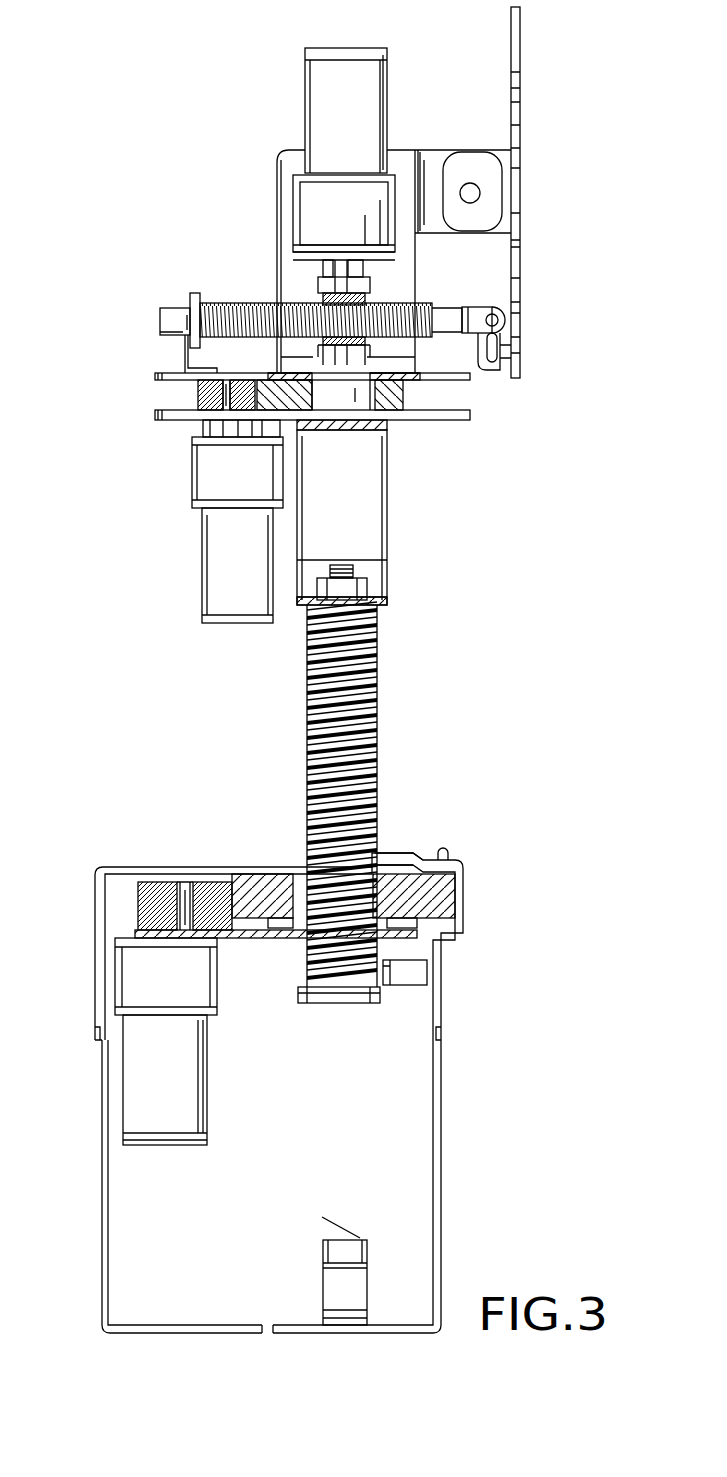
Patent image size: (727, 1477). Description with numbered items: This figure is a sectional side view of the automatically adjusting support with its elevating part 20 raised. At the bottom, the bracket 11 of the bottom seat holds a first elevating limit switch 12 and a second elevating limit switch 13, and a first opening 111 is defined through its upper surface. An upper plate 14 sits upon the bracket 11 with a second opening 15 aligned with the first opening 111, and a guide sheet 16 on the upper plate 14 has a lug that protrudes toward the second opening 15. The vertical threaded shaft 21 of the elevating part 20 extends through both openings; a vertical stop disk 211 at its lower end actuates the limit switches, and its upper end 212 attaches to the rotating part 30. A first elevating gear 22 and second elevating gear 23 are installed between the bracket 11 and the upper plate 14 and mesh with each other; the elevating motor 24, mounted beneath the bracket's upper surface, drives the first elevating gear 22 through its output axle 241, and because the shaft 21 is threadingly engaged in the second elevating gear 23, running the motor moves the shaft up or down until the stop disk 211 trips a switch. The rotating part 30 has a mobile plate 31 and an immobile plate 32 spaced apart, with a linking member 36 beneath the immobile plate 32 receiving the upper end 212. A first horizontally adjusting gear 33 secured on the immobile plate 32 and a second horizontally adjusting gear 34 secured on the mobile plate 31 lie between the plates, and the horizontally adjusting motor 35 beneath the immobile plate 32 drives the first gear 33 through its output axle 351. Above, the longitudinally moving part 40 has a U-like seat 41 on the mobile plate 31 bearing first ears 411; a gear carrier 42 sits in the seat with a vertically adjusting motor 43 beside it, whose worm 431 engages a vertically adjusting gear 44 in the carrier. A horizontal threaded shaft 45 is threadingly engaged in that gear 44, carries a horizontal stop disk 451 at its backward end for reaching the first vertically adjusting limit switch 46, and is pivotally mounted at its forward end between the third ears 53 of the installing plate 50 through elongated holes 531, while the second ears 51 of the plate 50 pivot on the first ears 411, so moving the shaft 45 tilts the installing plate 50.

The bracket 11 is at (441, 1110).
The first elevating limit switch 12 is at (330, 1288).
The second elevating limit switch 13 is at (424, 972).
The upper plate 14 is at (207, 872).
The second opening 15 is at (305, 870).
The guide sheet 16 is at (416, 855).
The elevating part 20 is at (396, 828).
The vertical threaded shaft 21 is at (380, 672).
The first elevating gear 22 is at (138, 898).
The second elevating gear 23 is at (455, 895).
The elevating motor 24 is at (150, 1108).
The rotating part 30 is at (556, 468).
The mobile plate 31 is at (472, 378).
The immobile plate 32 is at (456, 421).
The first horizontally adjusting gear 33 is at (200, 393).
The second horizontally adjusting gear 34 is at (400, 393).
The horizontally adjusting motor 35 is at (205, 590).
The linking member 36 is at (388, 500).
The longitudinally moving part 40 is at (452, 72).
The U-like seat 41 is at (283, 210).
The gear carrier 42 is at (335, 270).
The vertically adjusting motor 43 is at (315, 93).
The vertically adjusting gear 44 is at (373, 293).
The horizontal threaded shaft 45 is at (202, 300).
The first vertically adjusting limit switch 46 is at (165, 318).
The installing plate 50 is at (521, 45).
The second ears 51 is at (498, 150).
The third ears 53 is at (502, 310).
The first opening 111 is at (307, 938).
The vertical stop disk 211 is at (340, 1003).
The upper end 212 is at (343, 566).
The output axle 241 is at (180, 913).
The output axle 351 is at (222, 403).
The first ears 411 is at (430, 160).
The worm 431 is at (362, 273).
The horizontal stop disk 451 is at (190, 297).
The elongated holes 531 is at (496, 350).